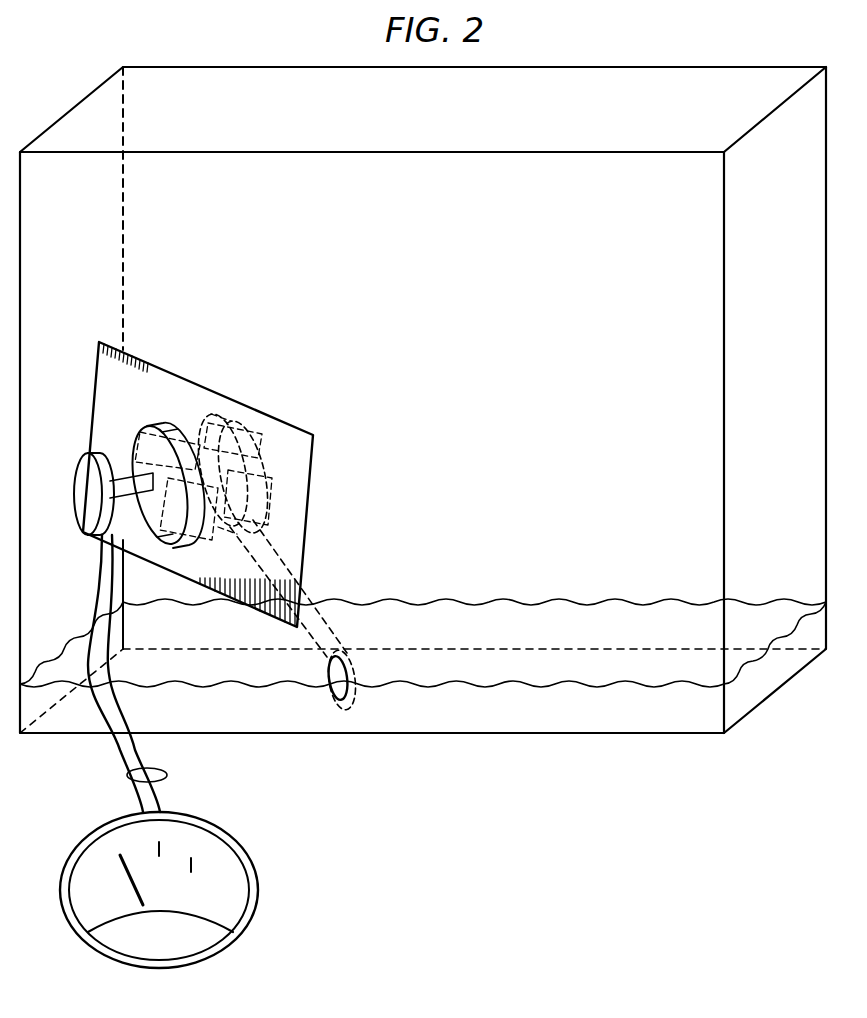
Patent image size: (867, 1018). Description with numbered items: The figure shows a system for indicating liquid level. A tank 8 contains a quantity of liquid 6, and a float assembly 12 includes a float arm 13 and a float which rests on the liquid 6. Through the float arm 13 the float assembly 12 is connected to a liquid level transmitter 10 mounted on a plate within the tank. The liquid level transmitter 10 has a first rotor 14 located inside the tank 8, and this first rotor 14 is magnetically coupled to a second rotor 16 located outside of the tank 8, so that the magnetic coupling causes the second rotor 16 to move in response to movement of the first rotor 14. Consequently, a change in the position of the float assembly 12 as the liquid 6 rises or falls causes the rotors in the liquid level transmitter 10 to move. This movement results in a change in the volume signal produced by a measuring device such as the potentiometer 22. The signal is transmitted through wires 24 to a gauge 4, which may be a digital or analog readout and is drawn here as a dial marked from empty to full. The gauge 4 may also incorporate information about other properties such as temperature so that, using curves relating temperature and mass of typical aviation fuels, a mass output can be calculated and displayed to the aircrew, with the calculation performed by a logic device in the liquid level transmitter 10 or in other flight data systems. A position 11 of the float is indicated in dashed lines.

The gauge 4 is at (82, 903).
The liquid 6 is at (523, 684).
The tank 8 is at (695, 84).
The liquid level transmitter 10 is at (213, 537).
The float position 11 is at (360, 663).
The float assembly 12 is at (330, 672).
The float arm 13 is at (317, 605).
The first rotor 14 is at (253, 427).
The second rotor 16 is at (158, 427).
The potentiometer 22 is at (80, 462).
The wires 24 is at (128, 775).